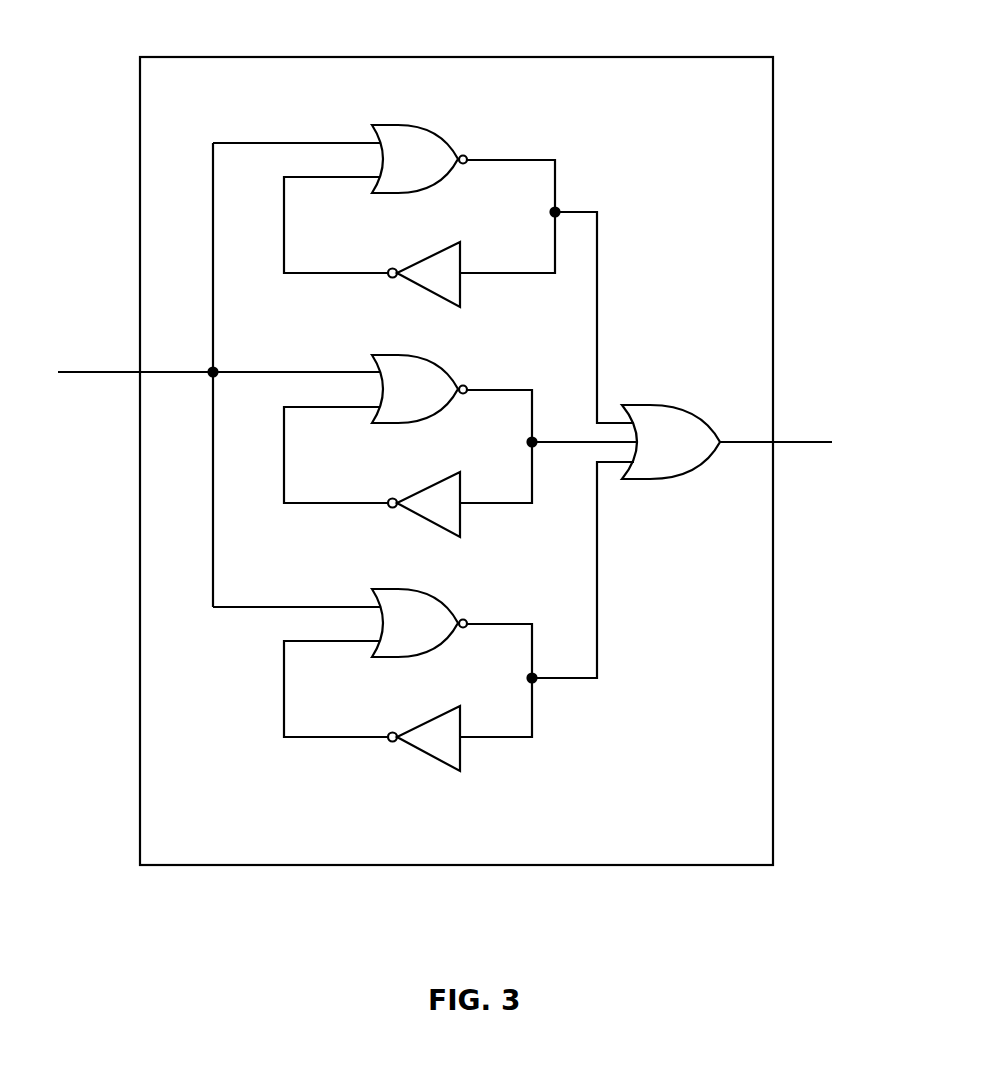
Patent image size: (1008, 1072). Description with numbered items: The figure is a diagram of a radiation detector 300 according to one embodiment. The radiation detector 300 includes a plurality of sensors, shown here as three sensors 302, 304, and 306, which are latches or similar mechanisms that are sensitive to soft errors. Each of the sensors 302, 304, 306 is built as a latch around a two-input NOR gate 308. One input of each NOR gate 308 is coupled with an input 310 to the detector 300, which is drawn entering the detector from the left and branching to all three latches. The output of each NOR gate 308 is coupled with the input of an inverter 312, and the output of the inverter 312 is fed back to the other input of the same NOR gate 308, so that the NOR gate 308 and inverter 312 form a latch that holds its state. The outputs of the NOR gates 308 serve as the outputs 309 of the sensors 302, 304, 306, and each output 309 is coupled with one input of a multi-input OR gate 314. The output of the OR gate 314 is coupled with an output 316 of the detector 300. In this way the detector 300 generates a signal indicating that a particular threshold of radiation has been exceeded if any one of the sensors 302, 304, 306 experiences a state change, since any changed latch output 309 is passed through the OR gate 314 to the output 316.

The radiation detector 300 is at (650, 57).
The sensor 302 is at (497, 125).
The sensor 304 is at (497, 333).
The sensor 306 is at (497, 568).
The NOR gate 308 is at (417, 125).
The output 309 is at (575, 211).
The input 310 is at (92, 371).
The inverter 312 is at (433, 255).
The OR gate 314 is at (657, 407).
The output 316 is at (825, 442).